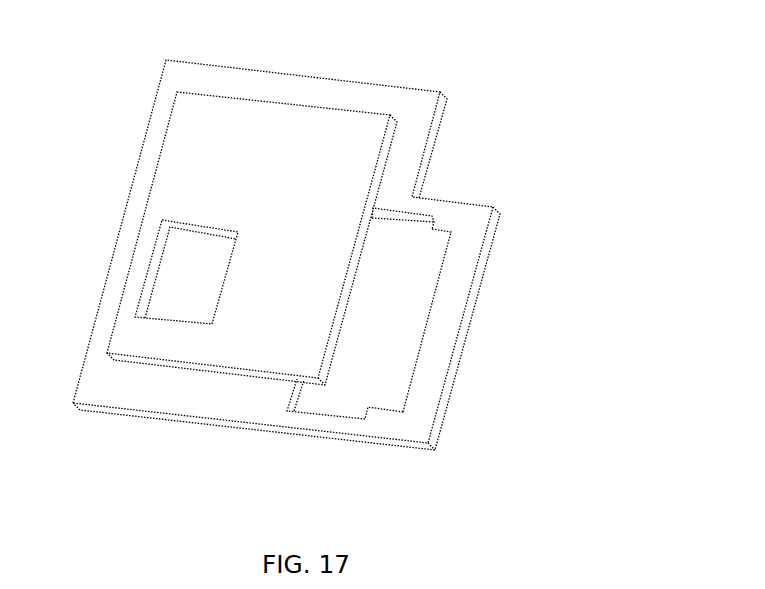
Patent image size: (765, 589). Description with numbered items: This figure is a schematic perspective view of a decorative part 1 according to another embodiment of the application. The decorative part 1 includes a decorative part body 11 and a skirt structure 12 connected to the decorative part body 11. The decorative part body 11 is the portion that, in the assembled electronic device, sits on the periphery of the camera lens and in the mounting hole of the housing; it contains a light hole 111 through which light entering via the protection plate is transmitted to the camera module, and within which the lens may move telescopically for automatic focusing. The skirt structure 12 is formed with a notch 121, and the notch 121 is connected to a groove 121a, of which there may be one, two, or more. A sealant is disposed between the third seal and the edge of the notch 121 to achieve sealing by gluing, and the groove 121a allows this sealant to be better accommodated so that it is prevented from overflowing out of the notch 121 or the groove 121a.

The decorative part 1 is at (300, 33).
The decorative part body 11 is at (181, 163).
The light hole 111 is at (174, 283).
The skirt structure 12 is at (477, 235).
The notch 121 is at (408, 317).
The groove 121a is at (418, 224).